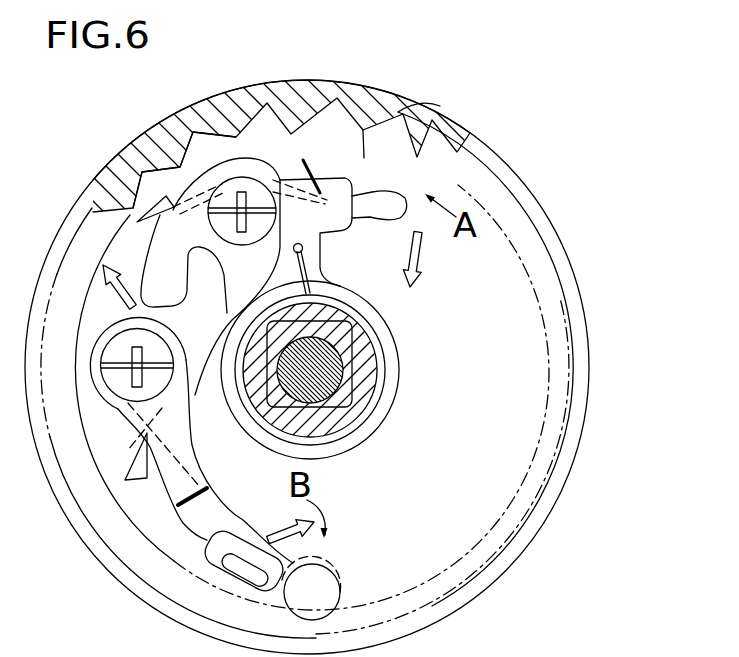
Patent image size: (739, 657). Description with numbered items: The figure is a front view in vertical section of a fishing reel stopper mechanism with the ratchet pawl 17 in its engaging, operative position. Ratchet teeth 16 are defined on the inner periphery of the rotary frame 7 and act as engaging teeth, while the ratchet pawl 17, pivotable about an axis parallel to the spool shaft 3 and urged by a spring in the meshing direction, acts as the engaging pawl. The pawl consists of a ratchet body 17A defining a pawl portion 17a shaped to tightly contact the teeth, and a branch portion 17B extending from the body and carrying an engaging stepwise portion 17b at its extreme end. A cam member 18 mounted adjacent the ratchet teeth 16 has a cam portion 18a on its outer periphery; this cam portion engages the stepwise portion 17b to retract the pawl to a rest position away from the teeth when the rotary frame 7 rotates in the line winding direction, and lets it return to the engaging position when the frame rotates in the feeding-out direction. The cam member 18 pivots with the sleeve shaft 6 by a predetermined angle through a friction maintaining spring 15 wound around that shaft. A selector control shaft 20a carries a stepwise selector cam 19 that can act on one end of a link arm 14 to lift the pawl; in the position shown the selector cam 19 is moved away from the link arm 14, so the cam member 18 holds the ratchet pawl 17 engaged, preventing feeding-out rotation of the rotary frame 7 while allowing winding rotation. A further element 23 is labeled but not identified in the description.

The spool shaft 3 is at (337, 392).
The sleeve shaft 6 is at (339, 405).
The rotary frame 7 is at (593, 334).
The link arm 14 is at (177, 420).
The friction maintaining spring 15 is at (375, 388).
The ratchet teeth 16 is at (95, 188).
The ratchet pawl 17 is at (200, 166).
The ratchet body 17A is at (200, 110).
The pawl portion 17a is at (410, 100).
The engaging stepwise portion 17b is at (410, 198).
The branch portion 17B is at (385, 196).
The cam member 18 is at (390, 367).
The cam portion 18a is at (339, 267).
The stepwise selector cam 19 is at (235, 577).
The selector control shaft 20a is at (330, 577).
The key 23 is at (351, 412).